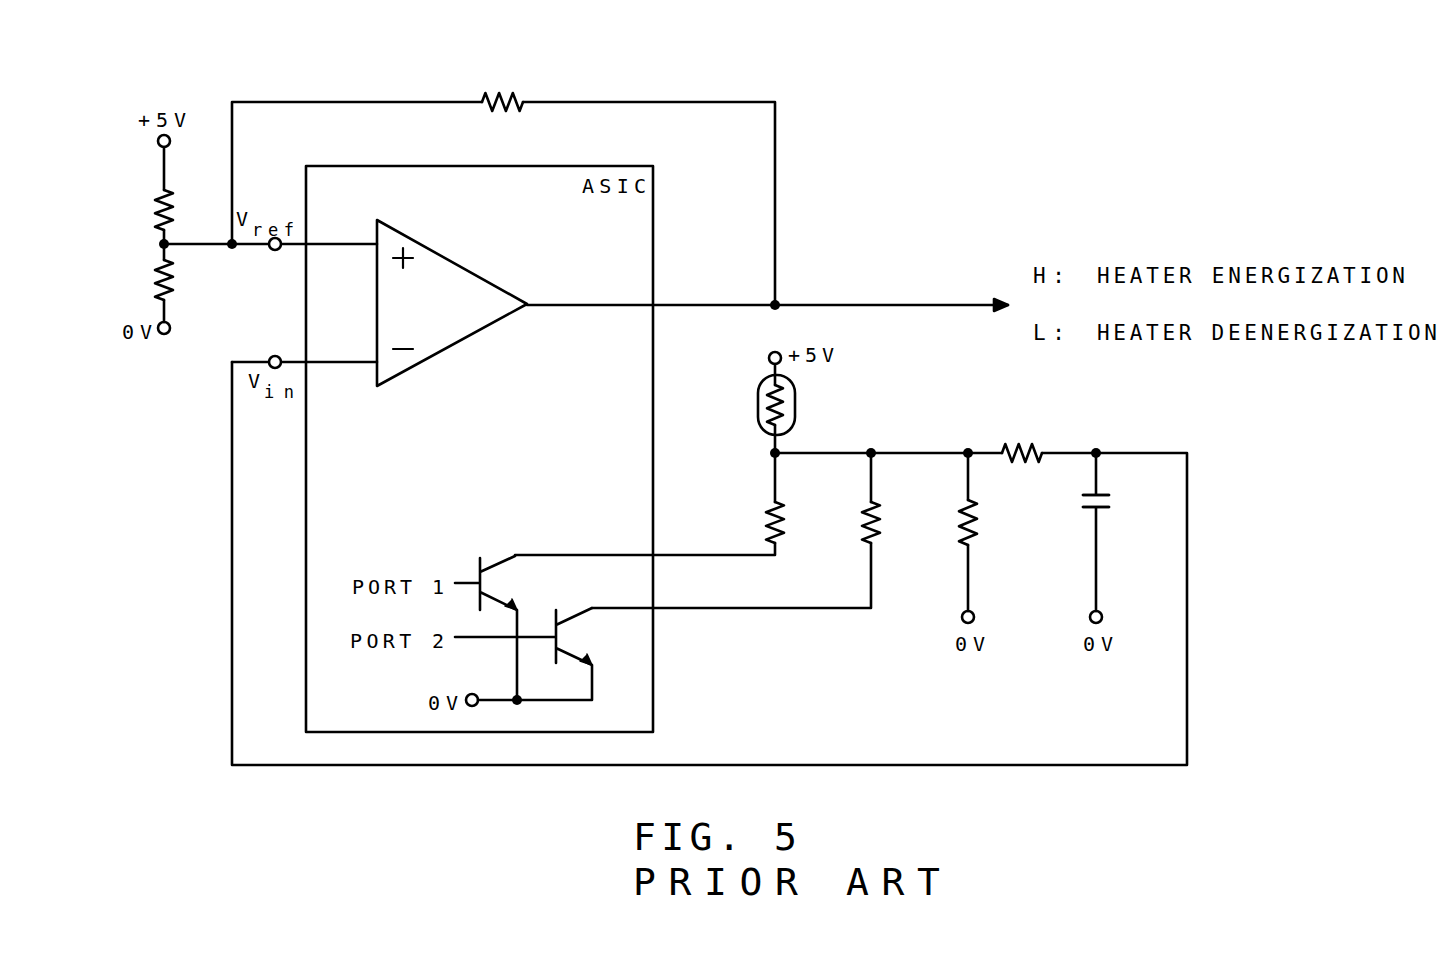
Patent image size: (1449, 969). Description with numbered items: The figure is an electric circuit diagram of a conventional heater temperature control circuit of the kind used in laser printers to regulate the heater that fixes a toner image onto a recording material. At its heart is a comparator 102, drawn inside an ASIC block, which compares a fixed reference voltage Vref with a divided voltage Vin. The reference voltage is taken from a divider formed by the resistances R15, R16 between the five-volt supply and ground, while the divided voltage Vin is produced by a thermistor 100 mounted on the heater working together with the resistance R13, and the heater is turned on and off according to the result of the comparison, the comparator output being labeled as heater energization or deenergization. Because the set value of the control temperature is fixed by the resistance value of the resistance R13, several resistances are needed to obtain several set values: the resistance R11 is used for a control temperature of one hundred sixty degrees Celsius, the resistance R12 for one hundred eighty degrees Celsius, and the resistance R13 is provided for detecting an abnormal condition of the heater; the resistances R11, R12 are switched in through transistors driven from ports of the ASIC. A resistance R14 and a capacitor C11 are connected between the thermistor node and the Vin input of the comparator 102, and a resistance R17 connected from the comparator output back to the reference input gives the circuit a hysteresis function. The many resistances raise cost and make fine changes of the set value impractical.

The thermistor 100 is at (797, 395).
The comparator 102 is at (452, 264).
The resistance R11 is at (765, 523).
The resistance R12 is at (861, 525).
The resistance R13 is at (958, 525).
The resistor R14 is at (1023, 444).
The resistor R15 is at (152, 214).
The resistor R16 is at (152, 286).
The resistance R17 is at (505, 93).
The capacitor C11 is at (1122, 504).